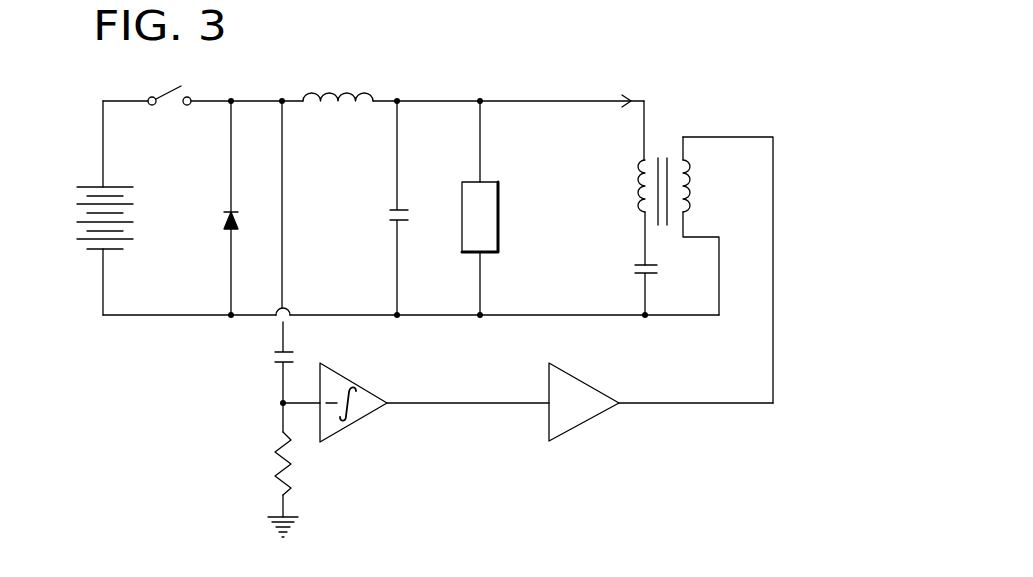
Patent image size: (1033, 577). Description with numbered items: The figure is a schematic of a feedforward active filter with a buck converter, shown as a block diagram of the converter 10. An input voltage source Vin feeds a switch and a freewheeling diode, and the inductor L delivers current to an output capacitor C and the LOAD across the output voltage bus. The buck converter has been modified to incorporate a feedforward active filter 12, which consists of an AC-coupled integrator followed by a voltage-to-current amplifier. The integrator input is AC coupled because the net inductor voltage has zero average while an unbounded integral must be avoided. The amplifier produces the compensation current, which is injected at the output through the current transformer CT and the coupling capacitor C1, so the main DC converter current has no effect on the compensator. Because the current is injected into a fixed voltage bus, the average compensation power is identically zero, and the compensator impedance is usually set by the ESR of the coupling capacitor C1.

The converter 10 is at (399, 214).
The feedforward active filter 12 is at (766, 436).
The inductor L is at (338, 120).
The output capacitor C is at (384, 208).
The coupling capacitor C1 is at (631, 285).
The current transformer CT is at (678, 208).
The input voltage source Vin is at (79, 218).
The load LOAD is at (523, 208).